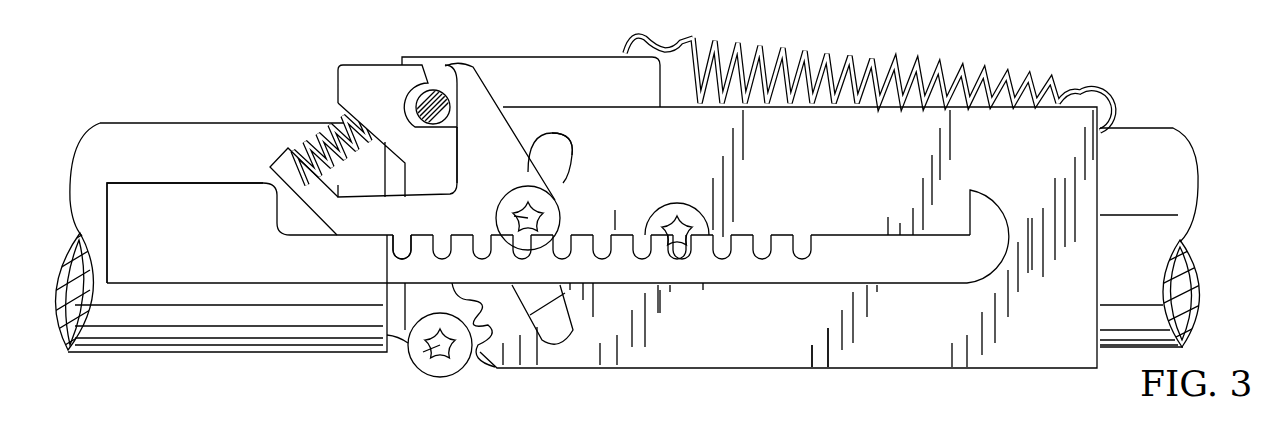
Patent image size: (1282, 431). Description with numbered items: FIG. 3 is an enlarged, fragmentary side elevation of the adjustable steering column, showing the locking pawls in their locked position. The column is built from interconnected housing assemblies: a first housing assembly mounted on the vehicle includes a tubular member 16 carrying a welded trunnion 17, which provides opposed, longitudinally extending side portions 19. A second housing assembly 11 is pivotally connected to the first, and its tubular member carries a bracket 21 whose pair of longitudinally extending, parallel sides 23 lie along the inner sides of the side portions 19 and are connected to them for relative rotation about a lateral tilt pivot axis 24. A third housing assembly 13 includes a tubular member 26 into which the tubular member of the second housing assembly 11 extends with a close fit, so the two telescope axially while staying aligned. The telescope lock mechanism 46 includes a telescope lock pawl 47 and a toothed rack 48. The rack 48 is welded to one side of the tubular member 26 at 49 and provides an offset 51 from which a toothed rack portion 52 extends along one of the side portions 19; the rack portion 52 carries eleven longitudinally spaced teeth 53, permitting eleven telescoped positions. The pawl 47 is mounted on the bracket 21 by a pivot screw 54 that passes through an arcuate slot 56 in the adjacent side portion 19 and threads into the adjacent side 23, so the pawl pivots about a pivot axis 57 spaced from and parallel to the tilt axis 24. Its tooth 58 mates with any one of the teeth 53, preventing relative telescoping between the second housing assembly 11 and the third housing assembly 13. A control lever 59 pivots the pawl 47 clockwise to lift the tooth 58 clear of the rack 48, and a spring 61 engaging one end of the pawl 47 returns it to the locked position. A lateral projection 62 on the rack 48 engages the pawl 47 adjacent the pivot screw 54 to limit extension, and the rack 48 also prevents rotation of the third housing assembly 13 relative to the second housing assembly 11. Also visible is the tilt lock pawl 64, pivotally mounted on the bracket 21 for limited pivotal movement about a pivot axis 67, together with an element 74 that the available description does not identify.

The second housing assembly 11 is at (486, 378).
The third housing assembly 13 is at (170, 113).
The tubular member 16 is at (1148, 150).
The trunnion 17 is at (1019, 375).
The side portions 19 is at (925, 337).
The bracket 21 is at (596, 56).
The sides 23 is at (560, 143).
The lateral tilt pivot axis 24 is at (683, 230).
The tubular member 26 is at (226, 135).
The telescope lock mechanism 46 is at (531, 114).
The telescope lock pawl 47 is at (480, 127).
The toothed rack 48 is at (723, 297).
The weld 49 is at (148, 218).
The offset 51 is at (262, 260).
The toothed rack portion 52 is at (828, 268).
The teeth 53 is at (757, 242).
The pivot screw 54 is at (558, 207).
The arcuate slot 56 is at (570, 147).
The pivot axis 57 is at (530, 217).
The tooth 58 is at (402, 235).
The control lever 59 is at (433, 100).
The spring 61 is at (333, 157).
The lateral projection 62 is at (990, 212).
The tilt lock pawl 64 is at (373, 73).
The pivot axis 67 is at (425, 350).
The return spring 74 is at (897, 67).